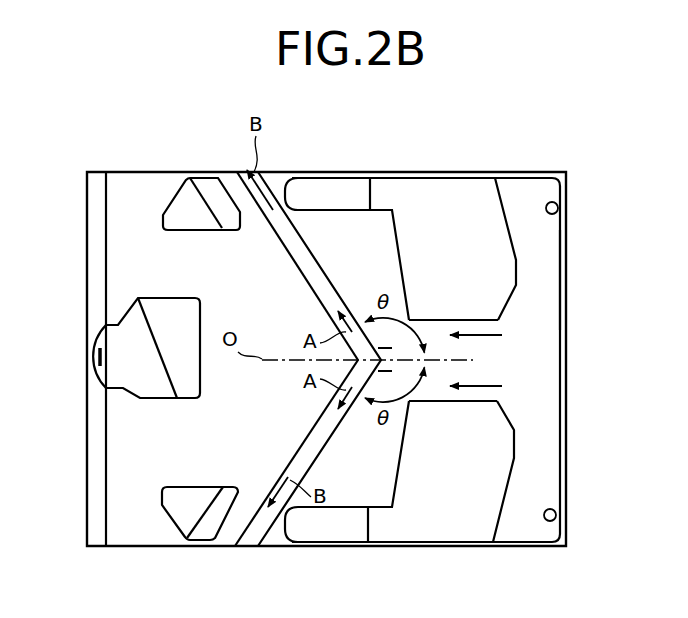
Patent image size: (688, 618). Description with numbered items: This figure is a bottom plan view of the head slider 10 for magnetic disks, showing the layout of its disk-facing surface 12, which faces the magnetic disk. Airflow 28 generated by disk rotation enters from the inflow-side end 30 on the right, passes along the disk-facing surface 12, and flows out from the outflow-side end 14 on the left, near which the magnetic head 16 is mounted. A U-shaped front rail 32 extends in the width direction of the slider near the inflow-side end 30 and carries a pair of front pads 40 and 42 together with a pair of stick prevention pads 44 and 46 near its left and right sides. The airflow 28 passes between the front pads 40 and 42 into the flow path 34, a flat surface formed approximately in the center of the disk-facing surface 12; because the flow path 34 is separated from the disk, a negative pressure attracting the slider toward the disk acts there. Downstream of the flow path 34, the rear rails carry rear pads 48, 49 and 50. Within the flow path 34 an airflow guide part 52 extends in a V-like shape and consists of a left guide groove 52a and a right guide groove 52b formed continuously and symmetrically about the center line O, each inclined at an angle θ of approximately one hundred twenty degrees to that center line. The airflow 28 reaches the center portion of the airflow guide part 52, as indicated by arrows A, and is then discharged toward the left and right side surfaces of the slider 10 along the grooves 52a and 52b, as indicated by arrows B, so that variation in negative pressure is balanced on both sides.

The head slider 10 is at (404, 151).
The disk-facing surface 12 is at (133, 178).
The outflow-side end 14 is at (86, 482).
The magnetic head 16 is at (97, 357).
The airflow 28 is at (486, 335).
The inflow-side end 30 is at (568, 393).
The front rail 32 is at (558, 287).
The flow path 34 is at (330, 232).
The front pad 40 is at (467, 530).
The front pad 42 is at (463, 195).
The stick prevention pad 44 is at (556, 515).
The stick prevention pad 46 is at (558, 208).
The rear pad 48 is at (170, 523).
The rear pad 49 is at (125, 302).
The rear pad 50 is at (177, 198).
The airflow guide part 52 is at (342, 283).
The left guide groove 52a is at (302, 444).
The right guide groove 52b is at (300, 269).